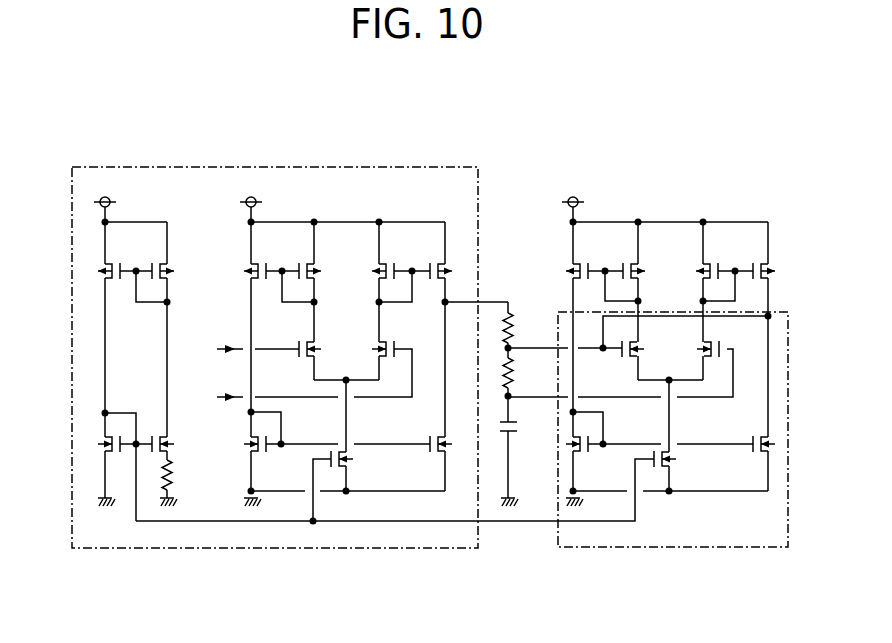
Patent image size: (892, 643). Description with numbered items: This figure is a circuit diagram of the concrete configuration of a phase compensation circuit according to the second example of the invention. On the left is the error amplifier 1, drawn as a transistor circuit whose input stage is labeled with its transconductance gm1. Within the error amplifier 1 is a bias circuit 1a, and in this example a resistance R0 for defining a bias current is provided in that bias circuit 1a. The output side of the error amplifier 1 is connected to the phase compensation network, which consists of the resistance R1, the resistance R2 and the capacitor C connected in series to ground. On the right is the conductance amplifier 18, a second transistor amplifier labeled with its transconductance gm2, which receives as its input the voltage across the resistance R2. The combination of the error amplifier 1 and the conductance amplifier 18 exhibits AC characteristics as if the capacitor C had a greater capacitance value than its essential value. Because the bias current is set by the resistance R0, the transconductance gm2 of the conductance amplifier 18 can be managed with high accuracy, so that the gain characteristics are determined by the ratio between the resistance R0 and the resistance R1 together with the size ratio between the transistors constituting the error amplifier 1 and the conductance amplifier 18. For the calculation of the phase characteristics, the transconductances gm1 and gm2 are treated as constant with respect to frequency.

The error amplifier 1 is at (252, 550).
The bias circuit 1a is at (79, 396).
The conductance amplifier 18 is at (788, 510).
The resistance R0 is at (182, 475).
The resistance R1 is at (523, 330).
The resistance R2 is at (523, 390).
The capacitor C is at (517, 463).
The transconductance gm1 is at (352, 361).
The transconductance gm2 is at (668, 351).